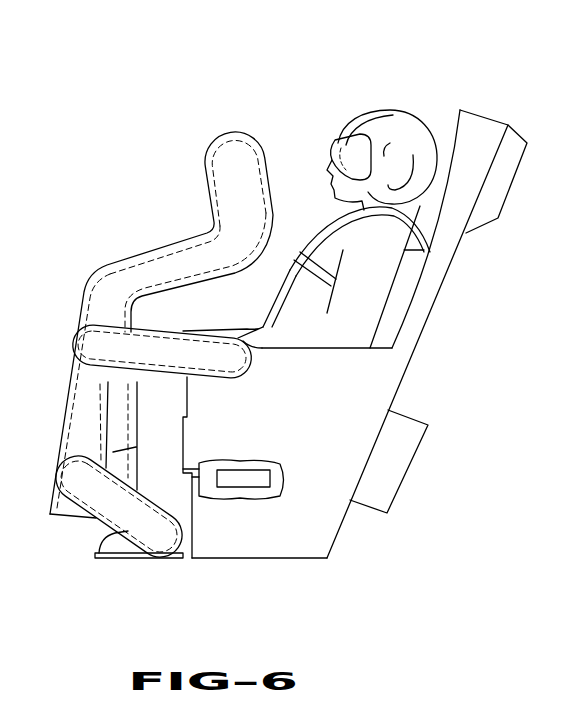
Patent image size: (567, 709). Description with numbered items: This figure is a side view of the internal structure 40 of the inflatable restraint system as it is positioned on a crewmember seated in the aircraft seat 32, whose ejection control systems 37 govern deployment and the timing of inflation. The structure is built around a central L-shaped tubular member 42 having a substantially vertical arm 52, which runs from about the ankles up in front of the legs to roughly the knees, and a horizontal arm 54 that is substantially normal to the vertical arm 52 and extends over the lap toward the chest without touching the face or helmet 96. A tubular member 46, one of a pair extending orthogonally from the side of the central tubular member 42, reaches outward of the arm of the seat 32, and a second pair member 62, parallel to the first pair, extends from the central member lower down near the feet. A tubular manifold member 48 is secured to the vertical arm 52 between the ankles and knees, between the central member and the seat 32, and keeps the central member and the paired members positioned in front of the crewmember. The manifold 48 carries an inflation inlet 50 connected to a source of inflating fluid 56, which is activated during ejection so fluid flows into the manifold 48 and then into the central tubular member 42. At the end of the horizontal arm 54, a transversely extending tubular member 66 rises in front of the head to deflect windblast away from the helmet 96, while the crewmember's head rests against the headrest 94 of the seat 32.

The aircraft seat 32 is at (312, 530).
The ejection control systems 37 is at (411, 462).
The internal structure 40 is at (114, 204).
The central L-shaped tubular member 42 is at (97, 267).
The tubular member 46 is at (205, 367).
The tubular manifold member 48 is at (132, 403).
The inflation inlet 50 is at (199, 482).
The vertical arm 52 is at (67, 395).
The horizontal arm 54 is at (168, 245).
The source of inflating fluid 56 is at (243, 478).
The second pair tubular member 62 is at (94, 496).
The transversely extending tubular member 66 is at (262, 158).
The headrest 94 is at (459, 112).
The helmet 96 is at (370, 110).